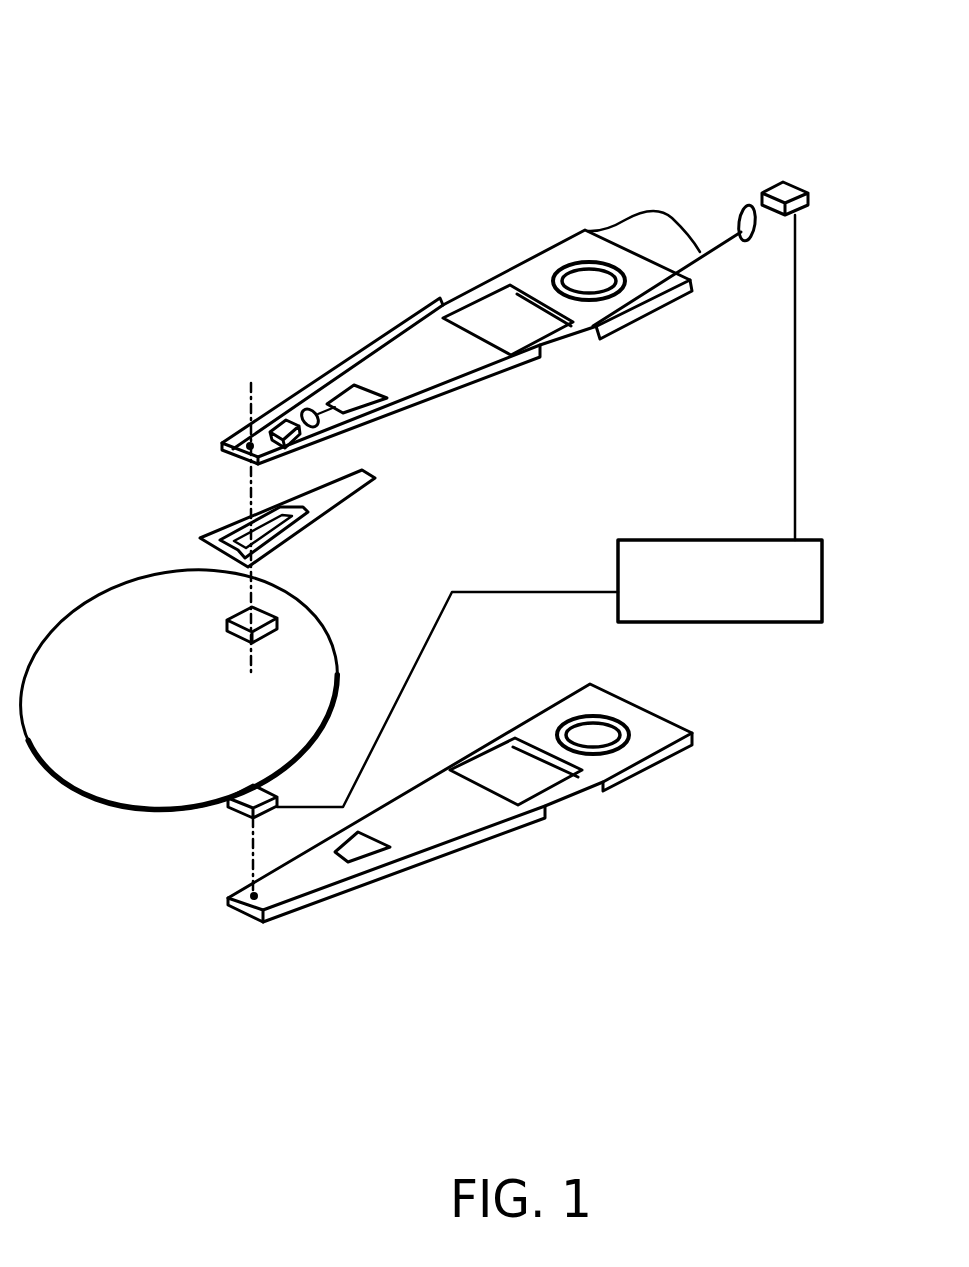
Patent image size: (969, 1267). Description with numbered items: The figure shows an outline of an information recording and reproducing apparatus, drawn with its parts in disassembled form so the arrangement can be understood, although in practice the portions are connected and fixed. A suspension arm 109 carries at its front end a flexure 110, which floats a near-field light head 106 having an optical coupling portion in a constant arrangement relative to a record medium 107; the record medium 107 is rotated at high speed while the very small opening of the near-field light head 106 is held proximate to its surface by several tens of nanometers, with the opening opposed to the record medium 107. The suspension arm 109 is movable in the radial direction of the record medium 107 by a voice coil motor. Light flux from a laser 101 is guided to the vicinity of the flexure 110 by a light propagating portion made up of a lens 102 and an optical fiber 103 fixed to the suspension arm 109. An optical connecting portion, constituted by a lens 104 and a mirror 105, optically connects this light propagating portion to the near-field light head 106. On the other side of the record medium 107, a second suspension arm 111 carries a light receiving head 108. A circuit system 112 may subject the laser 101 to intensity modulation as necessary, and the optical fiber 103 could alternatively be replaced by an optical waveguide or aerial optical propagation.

The laser 101 is at (780, 188).
The lens 102 is at (738, 212).
The optical fiber 103 is at (610, 232).
The lens 104 is at (308, 408).
The mirror 105 is at (256, 414).
The near-field light head 106 is at (277, 618).
The record medium 107 is at (93, 790).
The light receiving head 108 is at (250, 817).
The suspension arm 109 is at (457, 390).
The flexure 110 is at (220, 520).
The suspension arm 111 is at (487, 840).
The circuit system 112 is at (800, 622).